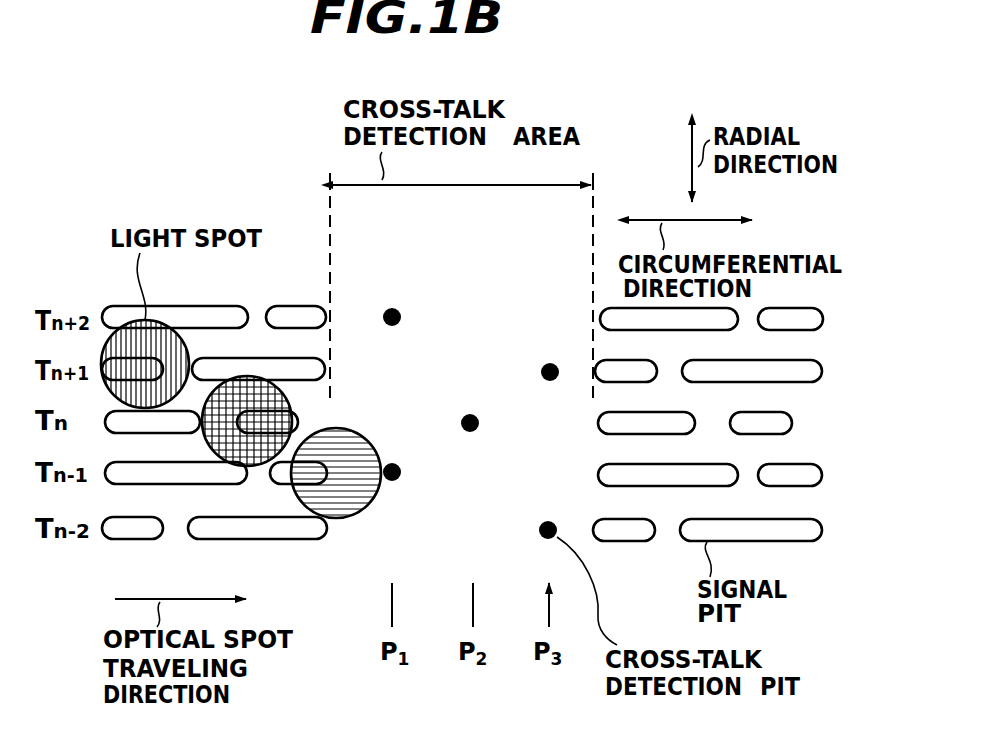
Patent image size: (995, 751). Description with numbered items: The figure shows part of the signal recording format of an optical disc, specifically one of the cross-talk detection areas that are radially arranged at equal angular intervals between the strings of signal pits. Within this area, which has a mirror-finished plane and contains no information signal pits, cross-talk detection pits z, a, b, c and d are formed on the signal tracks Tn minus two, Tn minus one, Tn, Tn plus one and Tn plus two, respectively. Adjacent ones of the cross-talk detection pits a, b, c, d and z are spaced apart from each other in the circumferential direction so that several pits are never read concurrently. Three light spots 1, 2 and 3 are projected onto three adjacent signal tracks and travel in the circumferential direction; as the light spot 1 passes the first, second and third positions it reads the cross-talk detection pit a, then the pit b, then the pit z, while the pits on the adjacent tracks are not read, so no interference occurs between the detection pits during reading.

The light spot 1 is at (362, 436).
The light spot 2 is at (277, 386).
The light spot 3 is at (186, 337).
The cross-talk detection pit a is at (392, 486).
The cross-talk detection pit b is at (471, 439).
The cross-talk detection pit c is at (550, 386).
The cross-talk detection pit d is at (392, 333).
The cross-talk detection pit z is at (549, 543).